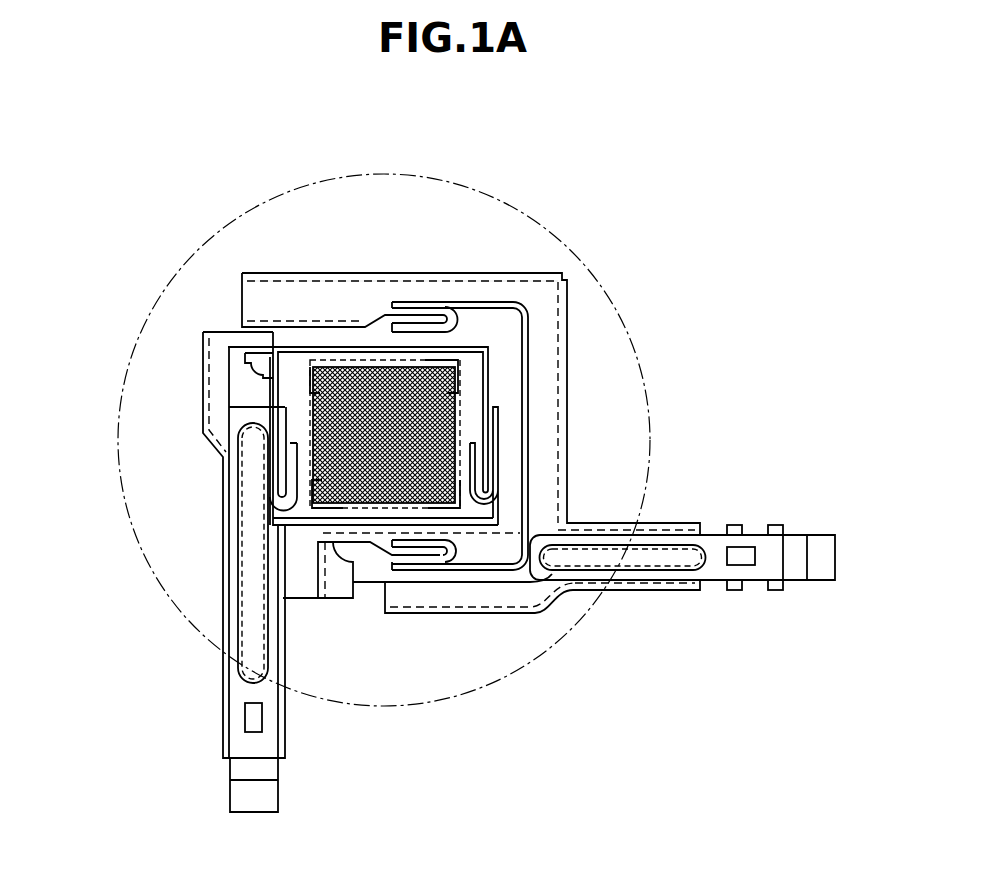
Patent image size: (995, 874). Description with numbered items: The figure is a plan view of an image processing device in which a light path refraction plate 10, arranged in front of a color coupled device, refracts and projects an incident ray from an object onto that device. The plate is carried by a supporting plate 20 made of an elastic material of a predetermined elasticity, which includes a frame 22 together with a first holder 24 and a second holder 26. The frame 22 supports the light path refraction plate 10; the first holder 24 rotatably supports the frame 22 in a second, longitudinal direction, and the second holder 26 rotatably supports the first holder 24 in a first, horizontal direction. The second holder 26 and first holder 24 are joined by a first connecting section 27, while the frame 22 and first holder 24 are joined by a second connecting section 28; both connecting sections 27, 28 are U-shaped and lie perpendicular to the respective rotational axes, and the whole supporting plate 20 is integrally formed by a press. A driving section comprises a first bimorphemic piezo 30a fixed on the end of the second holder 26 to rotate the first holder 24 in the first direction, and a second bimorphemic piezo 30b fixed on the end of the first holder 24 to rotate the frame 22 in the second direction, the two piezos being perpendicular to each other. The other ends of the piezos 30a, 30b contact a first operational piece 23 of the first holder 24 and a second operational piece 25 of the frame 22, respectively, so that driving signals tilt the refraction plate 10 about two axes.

The light path refraction plate 10 is at (403, 402).
The supporting plate 20 is at (572, 367).
The frame 22 is at (270, 385).
The first operational piece 23 is at (333, 598).
The first holder 24 is at (288, 375).
The second operational piece 25 is at (262, 363).
The second holder 26 is at (388, 295).
The first connecting section 27 is at (448, 318).
The second connecting section 28 is at (270, 495).
The first bimorphemic piezo 30a is at (760, 567).
The second bimorphemic piezo 30b is at (270, 790).